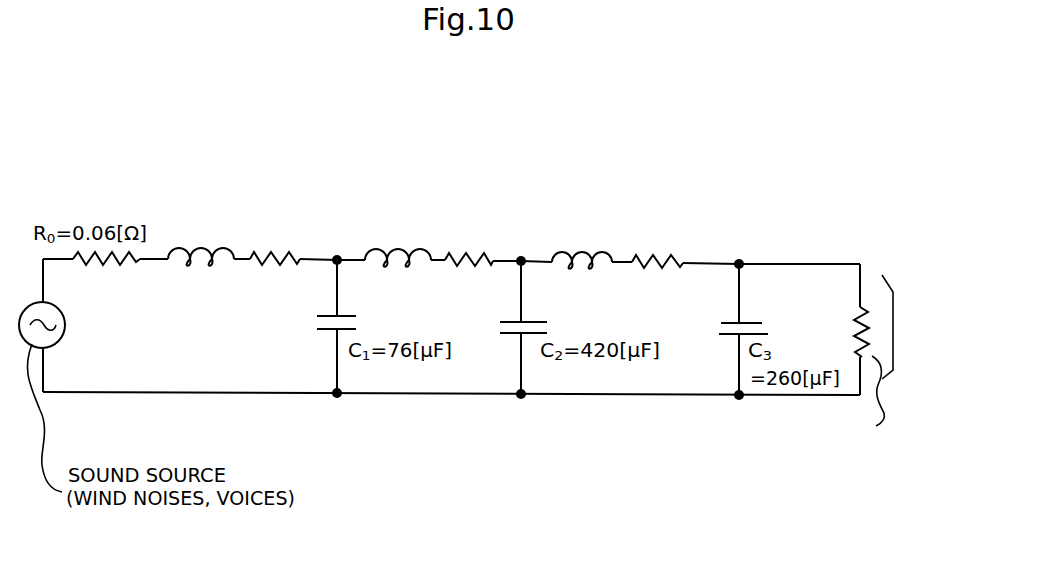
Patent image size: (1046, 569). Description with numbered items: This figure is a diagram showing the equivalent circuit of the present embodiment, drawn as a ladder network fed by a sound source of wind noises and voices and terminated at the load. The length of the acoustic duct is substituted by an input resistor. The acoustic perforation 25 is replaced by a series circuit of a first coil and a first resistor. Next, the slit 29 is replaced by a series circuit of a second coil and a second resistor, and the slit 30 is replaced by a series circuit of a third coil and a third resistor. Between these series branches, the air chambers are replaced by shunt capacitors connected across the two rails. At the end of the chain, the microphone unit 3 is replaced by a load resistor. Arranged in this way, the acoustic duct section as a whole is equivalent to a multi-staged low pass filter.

The acoustic perforation 25 is at (282, 204).
The slit 29 is at (472, 206).
The slit 30 is at (667, 206).
The microphone unit 3 is at (899, 344).